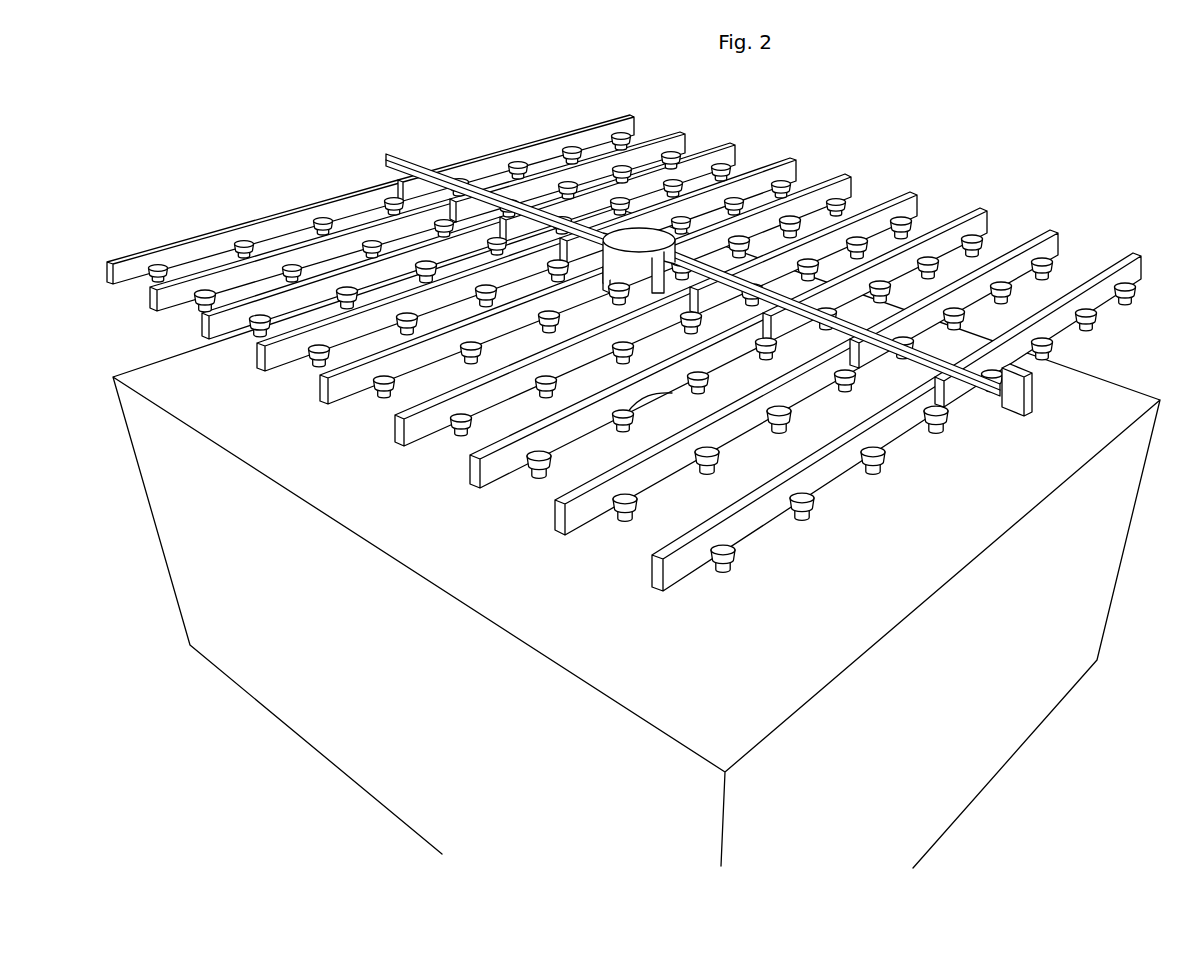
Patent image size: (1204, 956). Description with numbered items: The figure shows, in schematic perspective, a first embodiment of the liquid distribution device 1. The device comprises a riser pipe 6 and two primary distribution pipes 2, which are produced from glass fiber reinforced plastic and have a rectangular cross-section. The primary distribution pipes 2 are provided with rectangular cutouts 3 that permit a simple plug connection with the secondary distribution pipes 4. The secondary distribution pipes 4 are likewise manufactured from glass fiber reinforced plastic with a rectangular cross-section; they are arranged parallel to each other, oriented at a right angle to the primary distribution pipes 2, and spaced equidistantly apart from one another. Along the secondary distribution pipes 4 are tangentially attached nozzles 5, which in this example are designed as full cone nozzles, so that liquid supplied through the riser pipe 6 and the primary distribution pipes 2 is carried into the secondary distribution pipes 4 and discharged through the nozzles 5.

The liquid distribution device 1 is at (1078, 168).
The primary distribution pipe 2 is at (383, 161).
The rectangular cutout 3 is at (850, 343).
The secondary distribution pipe 4 is at (573, 513).
The nozzle 5 is at (1055, 337).
The riser pipe 6 is at (643, 241).